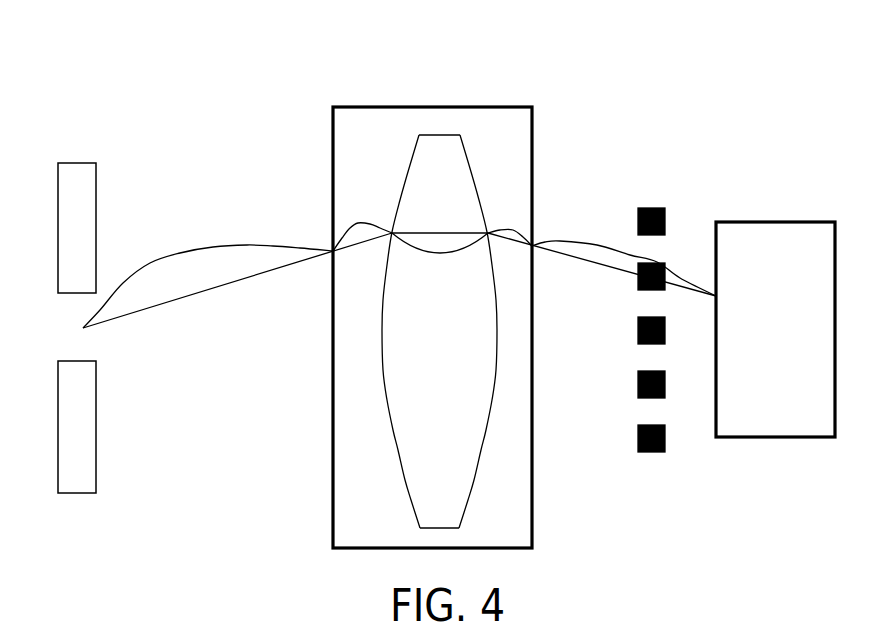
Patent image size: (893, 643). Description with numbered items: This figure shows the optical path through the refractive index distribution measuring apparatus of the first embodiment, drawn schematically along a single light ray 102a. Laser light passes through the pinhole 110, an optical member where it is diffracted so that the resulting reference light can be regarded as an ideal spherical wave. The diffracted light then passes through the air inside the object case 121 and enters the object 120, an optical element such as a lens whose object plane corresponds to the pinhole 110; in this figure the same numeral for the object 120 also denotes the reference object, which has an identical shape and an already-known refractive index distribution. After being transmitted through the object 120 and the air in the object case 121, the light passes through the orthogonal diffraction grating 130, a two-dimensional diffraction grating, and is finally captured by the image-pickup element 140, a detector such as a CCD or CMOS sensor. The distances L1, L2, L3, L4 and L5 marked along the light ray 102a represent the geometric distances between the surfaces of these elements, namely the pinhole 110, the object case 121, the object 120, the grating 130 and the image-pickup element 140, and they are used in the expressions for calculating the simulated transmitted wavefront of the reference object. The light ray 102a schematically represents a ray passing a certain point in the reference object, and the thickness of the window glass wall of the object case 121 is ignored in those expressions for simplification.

The pinhole 110 is at (77, 312).
The light ray 102a is at (175, 300).
The object case 121 is at (340, 123).
The object 120 is at (440, 147).
The orthogonal diffraction grating 130 is at (653, 313).
The image-pickup element 140 is at (775, 305).
The geometric distance L1 is at (208, 273).
The geometric distance L2 is at (358, 223).
The geometric distance L3 is at (440, 261).
The geometric distance L4 is at (513, 230).
The geometric distance L5 is at (624, 257).